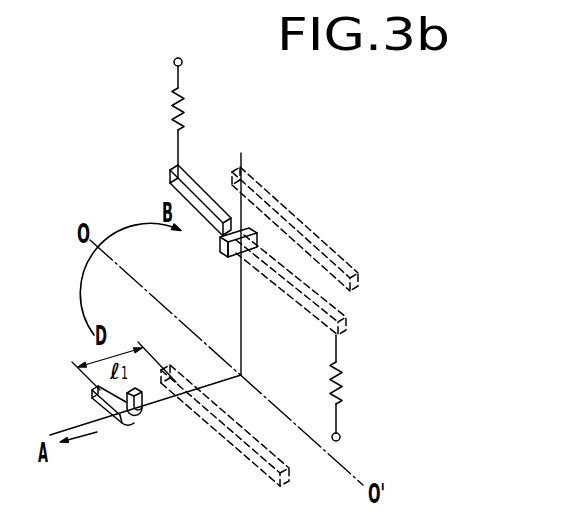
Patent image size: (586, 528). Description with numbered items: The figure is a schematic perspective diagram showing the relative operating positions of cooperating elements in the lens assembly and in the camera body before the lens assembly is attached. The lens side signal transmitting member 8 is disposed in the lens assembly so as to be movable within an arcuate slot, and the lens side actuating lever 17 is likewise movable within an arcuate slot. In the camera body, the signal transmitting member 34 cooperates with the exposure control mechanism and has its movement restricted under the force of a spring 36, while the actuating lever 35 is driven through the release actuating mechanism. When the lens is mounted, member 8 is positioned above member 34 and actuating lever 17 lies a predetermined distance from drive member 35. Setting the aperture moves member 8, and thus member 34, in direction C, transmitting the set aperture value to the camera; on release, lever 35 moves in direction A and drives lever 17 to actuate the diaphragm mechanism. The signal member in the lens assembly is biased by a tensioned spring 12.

The spring 36 is at (184, 110).
The signal transmitting member 34 is at (250, 238).
The signal transmitting member 8 is at (349, 328).
The spring 12 is at (342, 384).
The actuating lever 35 is at (122, 425).
The actuating lever 17 is at (252, 450).